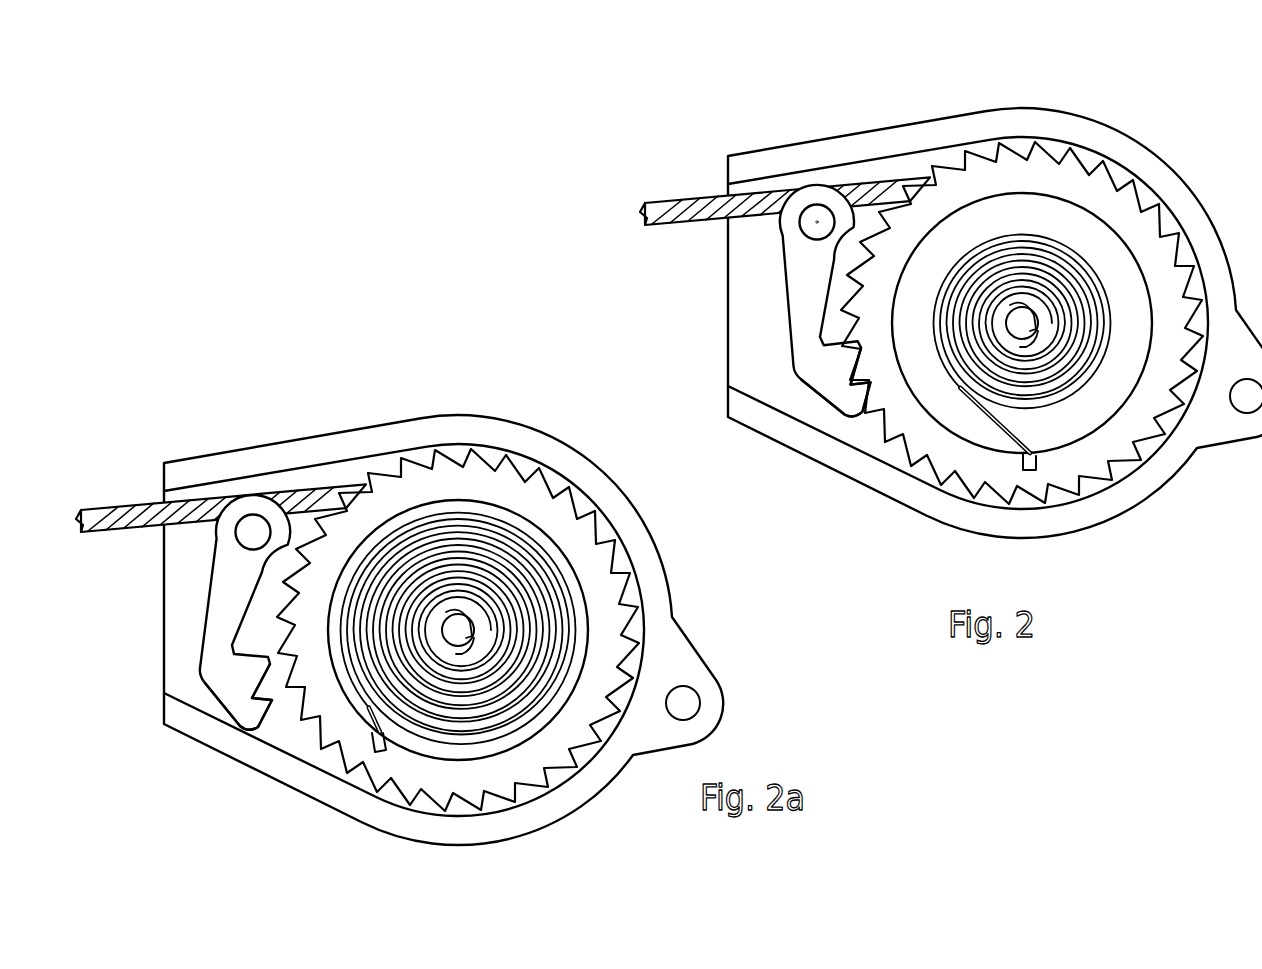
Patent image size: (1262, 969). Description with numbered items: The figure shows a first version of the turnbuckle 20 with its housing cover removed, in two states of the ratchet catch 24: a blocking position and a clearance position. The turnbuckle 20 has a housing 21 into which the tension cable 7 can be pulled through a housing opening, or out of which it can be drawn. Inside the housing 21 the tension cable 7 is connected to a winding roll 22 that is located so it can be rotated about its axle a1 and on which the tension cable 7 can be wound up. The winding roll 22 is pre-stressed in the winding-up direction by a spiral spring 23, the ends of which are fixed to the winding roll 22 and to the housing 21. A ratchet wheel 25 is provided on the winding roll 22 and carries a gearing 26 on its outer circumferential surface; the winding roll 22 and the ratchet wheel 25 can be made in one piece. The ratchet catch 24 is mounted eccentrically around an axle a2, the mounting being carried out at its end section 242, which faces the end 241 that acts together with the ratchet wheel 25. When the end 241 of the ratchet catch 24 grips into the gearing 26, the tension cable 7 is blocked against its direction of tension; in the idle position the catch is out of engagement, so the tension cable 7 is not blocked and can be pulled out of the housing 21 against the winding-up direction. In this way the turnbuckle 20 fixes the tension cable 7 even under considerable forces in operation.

In FIG. 2, the tension cable 7 is at (660, 203).
In FIG. 2A, the tension cable 7 is at (221, 508).
In FIG. 2, the turnbuckle 20 is at (784, 106).
In FIG. 2A, the turnbuckle 20 is at (277, 402).
In FIG. 2, the housing 21 is at (1045, 107).
In FIG. 2A, the housing 21 is at (404, 630).
In FIG. 2, the winding roll 22 is at (1028, 205).
In FIG. 2A, the winding roll 22 is at (458, 632).
In FIG. 2, the spiral spring 23 is at (1066, 235).
In FIG. 2A, the spiral spring 23 is at (458, 632).
In FIG. 2, the ratchet catch 24 is at (780, 354).
In FIG. 2A, the ratchet catch 24 is at (245, 612).
In FIG. 2, the end 241 is at (832, 375).
In FIG. 2A, the end 241 is at (240, 692).
In FIG. 2, the end section 242 is at (806, 258).
In FIG. 2A, the end section 242 is at (232, 569).
In FIG. 2, the ratchet wheel 25 is at (903, 410).
In FIG. 2A, the ratchet wheel 25 is at (418, 488).
In FIG. 2, the gearing 26 is at (905, 457).
In FIG. 2A, the gearing 26 is at (500, 453).
In FIG. 2, the axle a1 is at (1075, 395).
In FIG. 2, the axle a2 is at (815, 220).